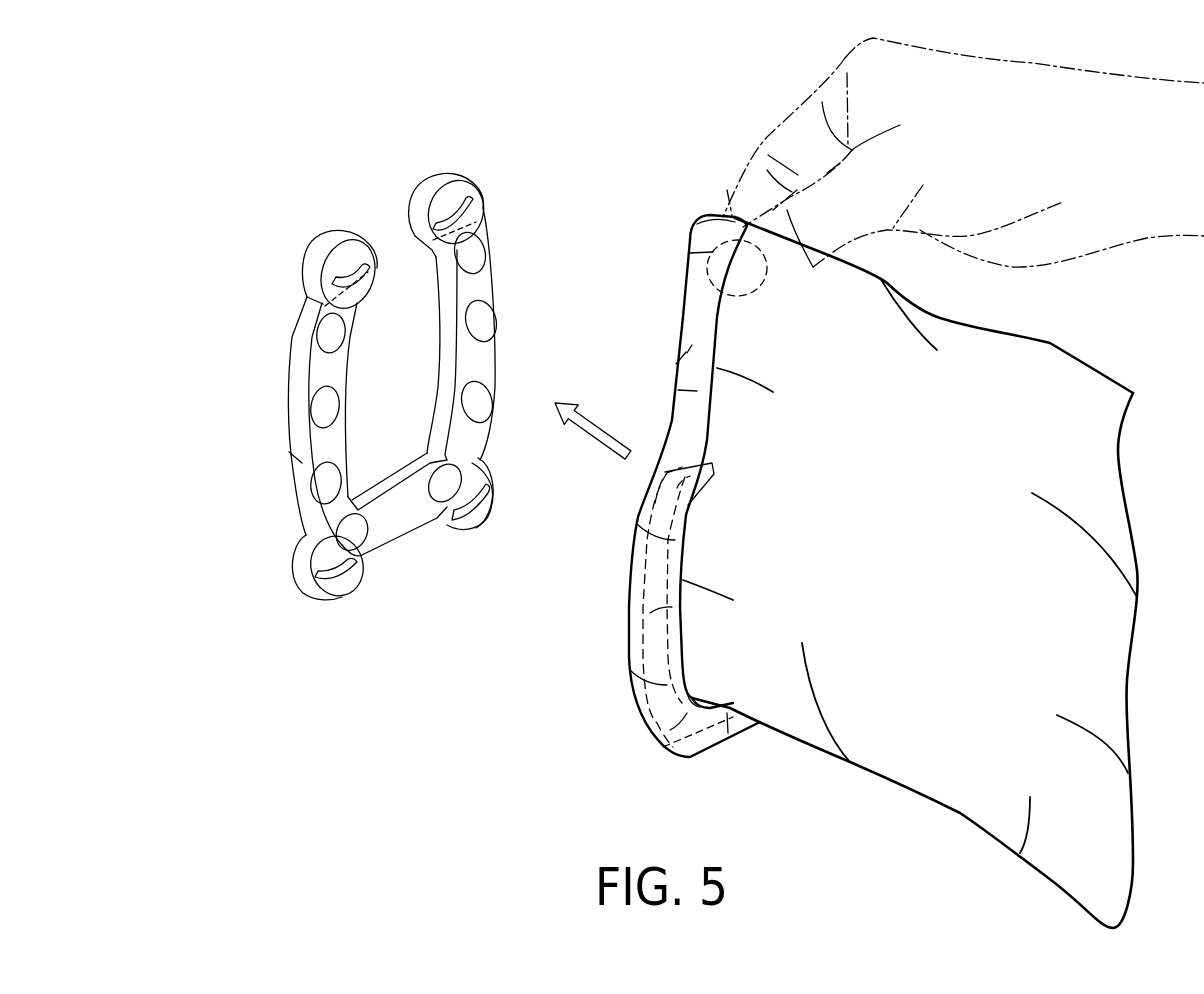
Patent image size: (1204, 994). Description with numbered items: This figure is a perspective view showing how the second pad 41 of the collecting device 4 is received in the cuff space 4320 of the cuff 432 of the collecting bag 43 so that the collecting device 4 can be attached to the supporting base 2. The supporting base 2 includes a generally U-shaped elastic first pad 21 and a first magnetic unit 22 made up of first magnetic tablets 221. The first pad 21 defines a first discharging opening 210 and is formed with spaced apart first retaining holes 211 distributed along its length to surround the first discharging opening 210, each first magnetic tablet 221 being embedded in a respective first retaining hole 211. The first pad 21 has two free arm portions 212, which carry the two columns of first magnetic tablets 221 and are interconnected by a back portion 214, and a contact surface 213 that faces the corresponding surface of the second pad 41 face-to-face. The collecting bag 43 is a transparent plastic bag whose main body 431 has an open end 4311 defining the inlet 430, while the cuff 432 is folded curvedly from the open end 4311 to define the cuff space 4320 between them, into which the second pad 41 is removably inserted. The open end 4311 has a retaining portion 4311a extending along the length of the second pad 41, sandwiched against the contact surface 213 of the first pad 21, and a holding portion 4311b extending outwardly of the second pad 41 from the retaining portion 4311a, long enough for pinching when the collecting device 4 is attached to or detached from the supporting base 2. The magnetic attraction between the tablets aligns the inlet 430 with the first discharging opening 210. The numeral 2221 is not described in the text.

The supporting base 2 is at (243, 247).
The first pad 21 is at (280, 359).
The first magnetic unit 22 is at (480, 252).
The first discharging opening 210 is at (402, 422).
The first retaining holes 211 is at (483, 338).
The free arm portions 212 is at (497, 292).
The contact surface 213 is at (318, 437).
The back portion 214 is at (397, 510).
The first magnetic tablets 221 is at (485, 313).
The engaging hole 2221 is at (322, 486).
The collecting device 4 is at (1088, 321).
The second pad 41 is at (631, 627).
The collecting bag 43 is at (1110, 366).
The inlet 430 is at (683, 313).
The main body 431 is at (955, 335).
The cuff 432 is at (710, 232).
The open end 4311 is at (681, 486).
The retaining portion 4311a is at (628, 612).
The holding portion 4311b is at (690, 253).
The cuff space 4320 is at (676, 364).